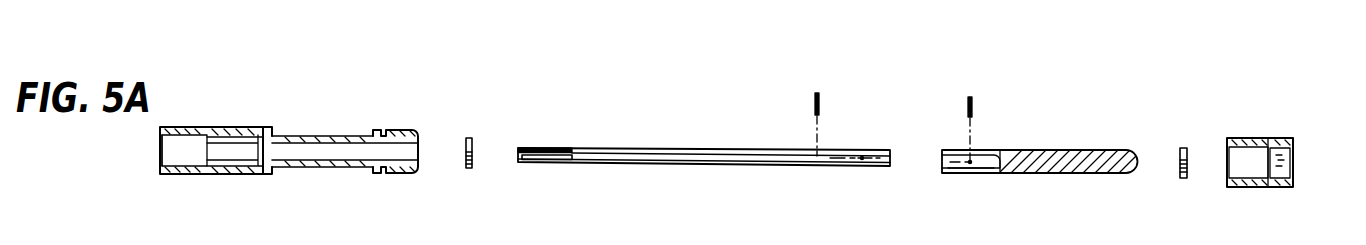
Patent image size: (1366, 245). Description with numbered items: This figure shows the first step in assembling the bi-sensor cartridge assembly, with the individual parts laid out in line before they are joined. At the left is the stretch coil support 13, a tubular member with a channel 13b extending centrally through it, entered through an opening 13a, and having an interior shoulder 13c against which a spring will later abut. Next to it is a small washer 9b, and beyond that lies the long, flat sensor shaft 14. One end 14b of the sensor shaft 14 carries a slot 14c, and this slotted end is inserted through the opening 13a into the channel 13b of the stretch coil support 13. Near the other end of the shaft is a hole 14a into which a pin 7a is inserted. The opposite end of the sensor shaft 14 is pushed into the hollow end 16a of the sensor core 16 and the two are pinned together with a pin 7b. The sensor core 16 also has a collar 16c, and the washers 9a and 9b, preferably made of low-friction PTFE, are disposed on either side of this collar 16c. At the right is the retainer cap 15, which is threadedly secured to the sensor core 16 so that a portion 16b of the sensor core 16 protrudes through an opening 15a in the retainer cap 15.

The stretch coil support 13 is at (261, 128).
The opening 13a is at (420, 157).
The channel 13b is at (329, 156).
The interior shoulder 13c is at (262, 172).
The washer 9a is at (1183, 146).
The washer 9b is at (469, 137).
The sensor shaft 14 is at (645, 149).
The hole 14a is at (815, 158).
The end 14b is at (550, 148).
The slot 14c is at (540, 162).
The pin 7a is at (814, 101).
The pin 7b is at (972, 99).
The sensor core 16 is at (1058, 150).
The hollow end 16a is at (986, 163).
The portion 16b is at (1108, 165).
The collar 16c is at (1055, 173).
The retainer cap 15 is at (1283, 139).
The opening 15a is at (1292, 168).